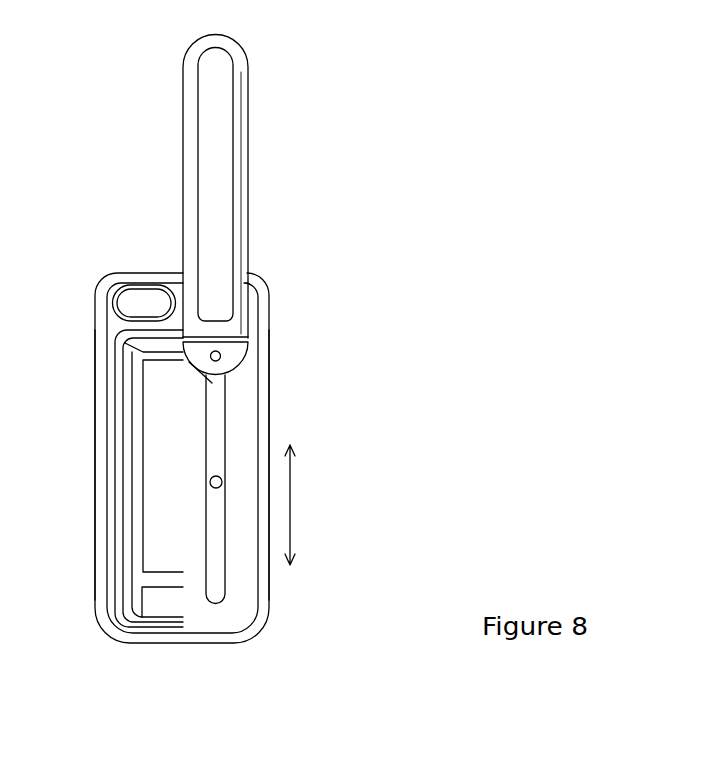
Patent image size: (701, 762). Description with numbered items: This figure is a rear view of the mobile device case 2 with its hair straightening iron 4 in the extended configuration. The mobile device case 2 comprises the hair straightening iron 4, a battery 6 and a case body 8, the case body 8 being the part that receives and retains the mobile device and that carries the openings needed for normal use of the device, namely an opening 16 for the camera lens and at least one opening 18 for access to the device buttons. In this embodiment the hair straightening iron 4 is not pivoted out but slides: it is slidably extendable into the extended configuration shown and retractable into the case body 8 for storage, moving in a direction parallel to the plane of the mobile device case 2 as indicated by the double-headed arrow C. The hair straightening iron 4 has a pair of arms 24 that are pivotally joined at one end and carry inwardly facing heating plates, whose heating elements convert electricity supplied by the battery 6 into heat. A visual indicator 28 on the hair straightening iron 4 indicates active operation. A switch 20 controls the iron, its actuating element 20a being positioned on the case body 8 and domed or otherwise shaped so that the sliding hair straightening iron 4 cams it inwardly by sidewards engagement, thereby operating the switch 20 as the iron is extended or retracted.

The mobile device case 2 is at (398, 178).
The hair straightening iron 4 is at (322, 149).
The battery 6 is at (160, 607).
The case body 8 is at (243, 617).
The opening 16 is at (143, 290).
The opening 18 is at (97, 359).
The switch 20 is at (245, 454).
The actuating element 20a is at (212, 480).
The arm 24 is at (236, 73).
The visual indicator 28 is at (220, 360).
The double-headed arrow C is at (303, 505).